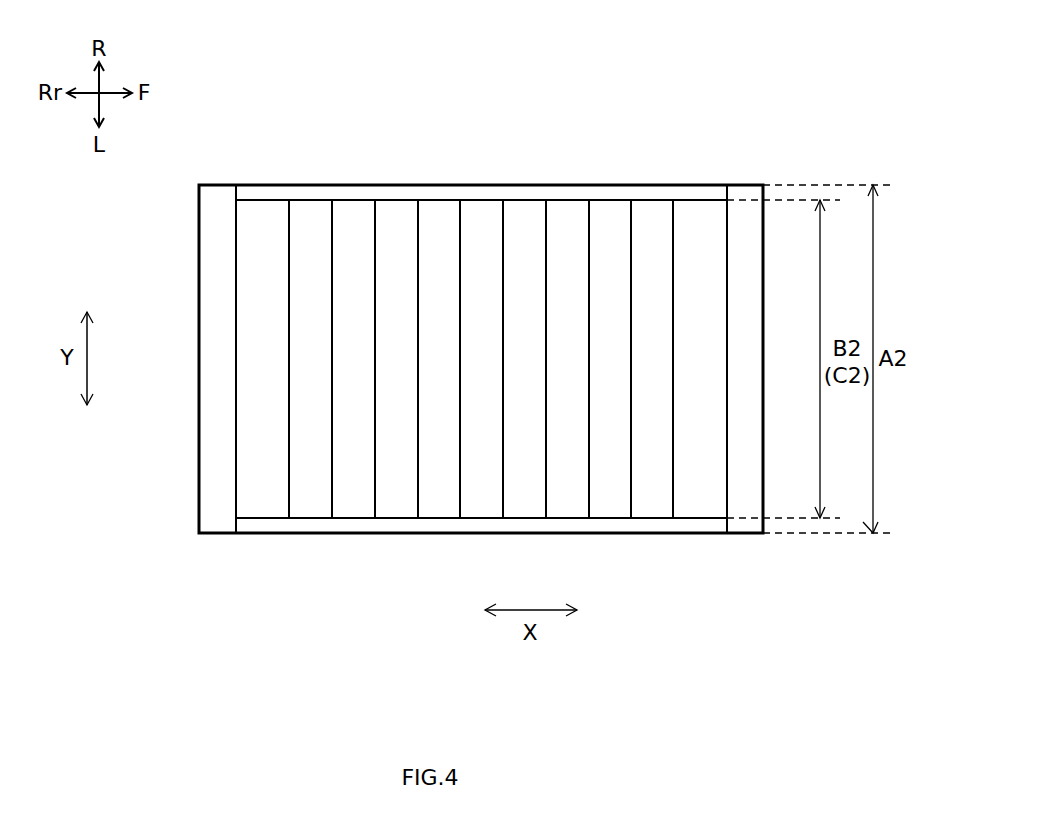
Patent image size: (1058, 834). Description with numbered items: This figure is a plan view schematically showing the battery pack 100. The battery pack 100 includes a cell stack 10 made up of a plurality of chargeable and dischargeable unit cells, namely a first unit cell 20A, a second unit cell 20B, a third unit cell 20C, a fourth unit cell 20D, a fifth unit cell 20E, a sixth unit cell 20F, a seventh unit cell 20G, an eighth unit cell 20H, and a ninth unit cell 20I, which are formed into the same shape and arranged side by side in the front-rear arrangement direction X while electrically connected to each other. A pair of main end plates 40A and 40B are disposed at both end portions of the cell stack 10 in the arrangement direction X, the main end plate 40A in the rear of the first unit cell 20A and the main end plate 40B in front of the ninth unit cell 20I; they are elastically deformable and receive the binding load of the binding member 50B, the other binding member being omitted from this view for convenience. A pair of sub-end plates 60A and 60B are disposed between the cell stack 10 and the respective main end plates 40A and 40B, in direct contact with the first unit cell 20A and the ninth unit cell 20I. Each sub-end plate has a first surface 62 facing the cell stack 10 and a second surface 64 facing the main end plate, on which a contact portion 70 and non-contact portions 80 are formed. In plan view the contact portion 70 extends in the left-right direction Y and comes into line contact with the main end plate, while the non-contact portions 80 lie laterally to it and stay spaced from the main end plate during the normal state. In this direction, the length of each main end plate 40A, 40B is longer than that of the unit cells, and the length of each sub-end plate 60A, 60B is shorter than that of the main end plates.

The battery pack 100 is at (781, 118).
The cell stack 10 is at (402, 522).
The first unit cell 20A is at (302, 208).
The second unit cell 20B is at (353, 208).
The third unit cell 20C is at (395, 208).
The fourth unit cell 20D is at (440, 208).
The fifth unit cell 20E is at (478, 208).
The sixth unit cell 20F is at (523, 206).
The seventh unit cell 20G is at (561, 208).
The eighth unit cell 20H is at (605, 208).
The ninth unit cell 20I is at (647, 208).
The main end plate 40A is at (210, 512).
The main end plate 40B is at (745, 512).
The binding member 50B is at (705, 185).
The sub-end plate 60A is at (257, 522).
The sub-end plate 60B is at (705, 522).
The first surface 62 is at (292, 424).
The second surface 64 is at (234, 436).
The contact portion 70 is at (236, 360).
The non-contact portion 80 is at (253, 287).